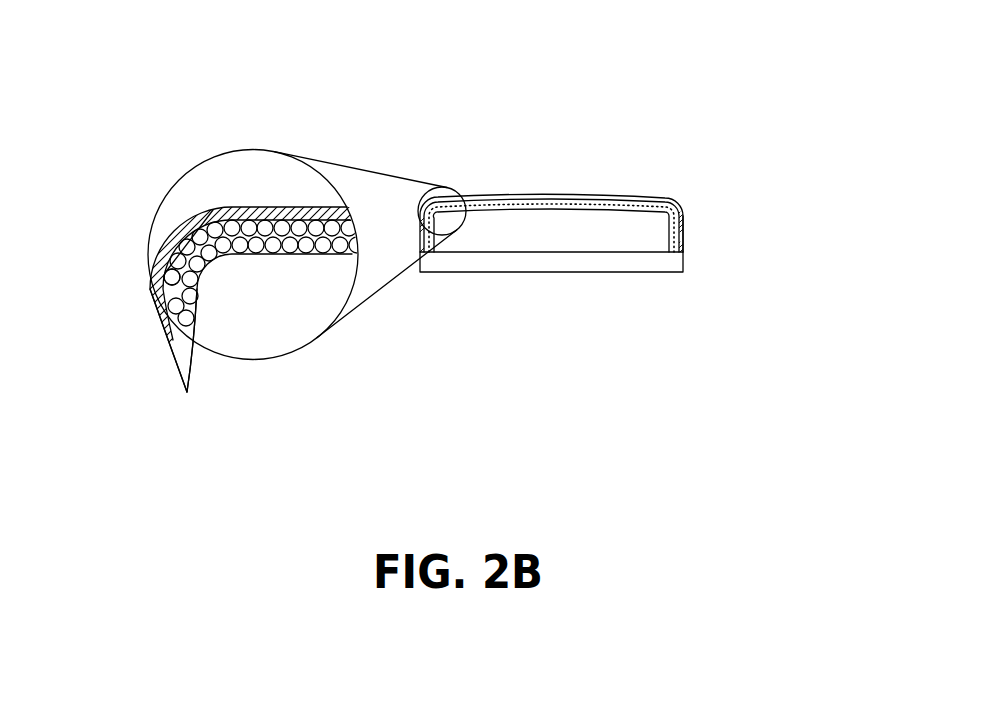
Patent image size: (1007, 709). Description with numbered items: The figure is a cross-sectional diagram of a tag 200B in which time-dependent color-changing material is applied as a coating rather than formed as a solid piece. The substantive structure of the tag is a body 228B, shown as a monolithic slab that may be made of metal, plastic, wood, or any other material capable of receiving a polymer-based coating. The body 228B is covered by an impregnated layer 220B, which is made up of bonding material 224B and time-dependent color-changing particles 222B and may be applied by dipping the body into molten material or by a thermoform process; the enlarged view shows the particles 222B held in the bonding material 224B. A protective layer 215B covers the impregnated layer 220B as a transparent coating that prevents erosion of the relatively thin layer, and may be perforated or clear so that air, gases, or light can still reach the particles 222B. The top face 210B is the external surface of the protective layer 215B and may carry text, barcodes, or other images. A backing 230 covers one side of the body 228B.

The tag 200B is at (613, 110).
The top face 210B is at (627, 195).
The protective layer 215B is at (676, 202).
The impregnated layer 220B is at (682, 210).
The particles 222B is at (181, 300).
The bonding material 224B is at (155, 275).
The body 228B is at (653, 243).
The backing 230 is at (665, 262).